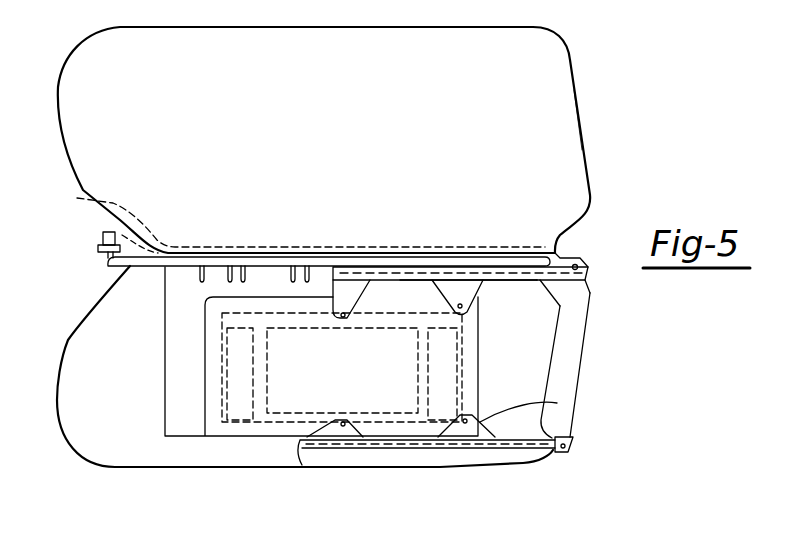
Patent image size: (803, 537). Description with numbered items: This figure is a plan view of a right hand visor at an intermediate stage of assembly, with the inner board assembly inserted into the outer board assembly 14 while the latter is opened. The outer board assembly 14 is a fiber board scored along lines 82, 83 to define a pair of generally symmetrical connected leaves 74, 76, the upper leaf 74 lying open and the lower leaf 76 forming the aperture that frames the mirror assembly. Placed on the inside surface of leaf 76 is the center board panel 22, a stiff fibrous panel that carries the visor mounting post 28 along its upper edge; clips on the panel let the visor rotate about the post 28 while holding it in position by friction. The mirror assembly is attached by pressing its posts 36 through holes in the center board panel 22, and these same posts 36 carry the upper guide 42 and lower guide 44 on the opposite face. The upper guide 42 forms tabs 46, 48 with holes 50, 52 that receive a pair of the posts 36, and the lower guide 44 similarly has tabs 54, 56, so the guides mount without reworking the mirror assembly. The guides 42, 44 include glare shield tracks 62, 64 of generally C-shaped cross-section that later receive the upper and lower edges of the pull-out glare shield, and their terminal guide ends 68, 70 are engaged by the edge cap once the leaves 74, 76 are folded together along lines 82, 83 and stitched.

The outer board assembly 14 is at (583, 118).
The leaf 74 is at (583, 150).
The score line 82 is at (299, 219).
The score line 83 is at (118, 223).
The visor mounting post 28 is at (108, 265).
The leaf 76 is at (585, 362).
The tab 46 is at (322, 288).
The tab 48 is at (440, 302).
The hole 50 is at (343, 320).
The hole 52 is at (462, 308).
The upper guide 42 is at (580, 258).
The guide end 68 is at (578, 266).
The glare shield track 62 is at (575, 287).
The center board panel 22 is at (590, 317).
The tab 56 is at (557, 403).
The tab 54 is at (302, 465).
The glare shield track 64 is at (495, 450).
The posts 36 is at (465, 424).
The guide end 70 is at (578, 441).
The lower guide 44 is at (568, 453).